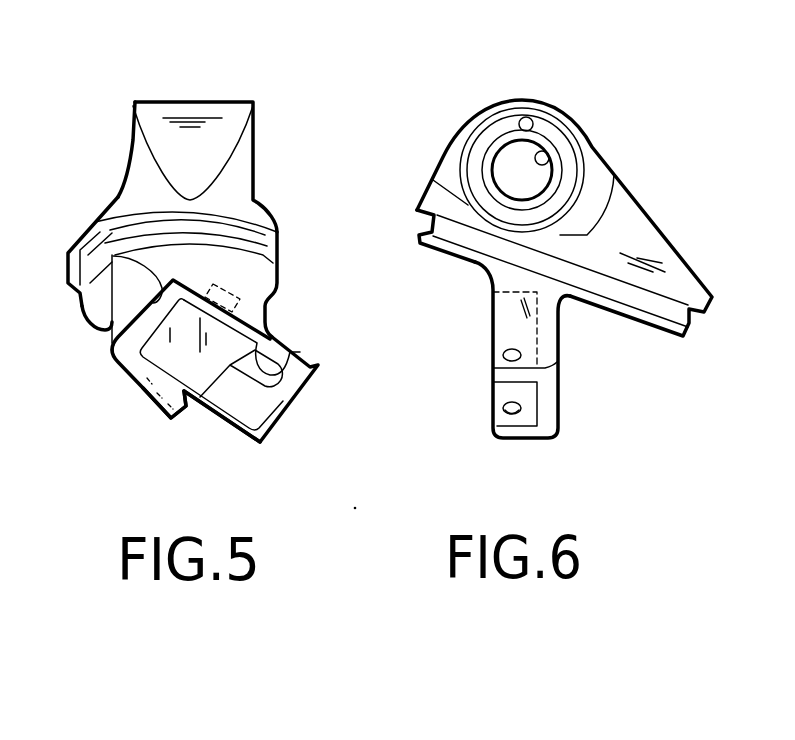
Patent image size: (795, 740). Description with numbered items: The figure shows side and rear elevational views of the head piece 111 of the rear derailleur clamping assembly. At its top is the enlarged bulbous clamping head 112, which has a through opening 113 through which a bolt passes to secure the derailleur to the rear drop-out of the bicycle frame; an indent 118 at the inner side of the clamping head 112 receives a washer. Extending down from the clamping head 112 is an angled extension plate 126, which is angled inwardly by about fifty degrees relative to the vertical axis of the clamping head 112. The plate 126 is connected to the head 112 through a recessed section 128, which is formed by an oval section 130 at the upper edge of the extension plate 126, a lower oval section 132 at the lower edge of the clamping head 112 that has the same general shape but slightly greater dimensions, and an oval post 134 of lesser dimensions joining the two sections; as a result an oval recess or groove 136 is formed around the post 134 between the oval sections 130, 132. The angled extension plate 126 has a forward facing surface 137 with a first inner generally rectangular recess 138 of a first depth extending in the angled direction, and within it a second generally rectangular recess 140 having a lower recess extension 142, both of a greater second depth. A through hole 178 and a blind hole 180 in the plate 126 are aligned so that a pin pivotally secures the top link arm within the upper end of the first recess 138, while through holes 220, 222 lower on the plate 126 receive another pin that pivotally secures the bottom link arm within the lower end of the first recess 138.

In FIG. 5, the head piece 111 is at (247, 84).
In FIG. 6, the head piece 111 is at (562, 91).
In FIG. 5, the bulbous clamping head 112 is at (175, 101).
In FIG. 6, the bulbous clamping head 112 is at (490, 108).
In FIG. 6, the through opening 113 is at (545, 165).
In FIG. 6, the indent 118 is at (593, 203).
In FIG. 5, the angled extension plate 126 is at (120, 383).
In FIG. 6, the angled extension plate 126 is at (505, 325).
In FIG. 5, the recessed section 128 is at (153, 230).
In FIG. 6, the recessed section 128 is at (705, 325).
In FIG. 5, the oval section 130 is at (88, 318).
In FIG. 6, the oval section 130 is at (432, 248).
In FIG. 5, the lower oval section 132 is at (260, 217).
In FIG. 6, the lower oval section 132 is at (420, 207).
In FIG. 5, the oval post 134 is at (218, 227).
In FIG. 6, the oval post 134 is at (433, 222).
In FIG. 6, the oval recess or groove 136 is at (637, 300).
In FIG. 5, the forward facing surface 137 is at (247, 277).
In FIG. 5, the first inner generally rectangular recess 138 is at (113, 258).
In FIG. 5, the second generally rectangular recess 140 is at (123, 353).
In FIG. 5, the lower recess extension 142 is at (272, 328).
In FIG. 5, the through hole 178 is at (145, 397).
In FIG. 5, the blind hole 180 is at (214, 291).
In FIG. 6, the blind hole 180 is at (503, 355).
In FIG. 5, the through hole 220 is at (245, 437).
In FIG. 5, the through hole 222 is at (312, 360).
In FIG. 6, the through hole 222 is at (512, 414).